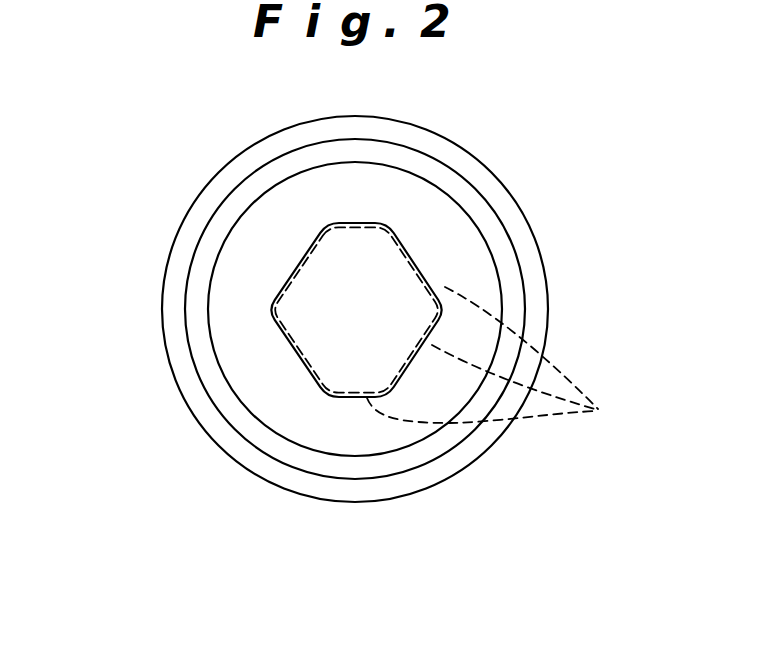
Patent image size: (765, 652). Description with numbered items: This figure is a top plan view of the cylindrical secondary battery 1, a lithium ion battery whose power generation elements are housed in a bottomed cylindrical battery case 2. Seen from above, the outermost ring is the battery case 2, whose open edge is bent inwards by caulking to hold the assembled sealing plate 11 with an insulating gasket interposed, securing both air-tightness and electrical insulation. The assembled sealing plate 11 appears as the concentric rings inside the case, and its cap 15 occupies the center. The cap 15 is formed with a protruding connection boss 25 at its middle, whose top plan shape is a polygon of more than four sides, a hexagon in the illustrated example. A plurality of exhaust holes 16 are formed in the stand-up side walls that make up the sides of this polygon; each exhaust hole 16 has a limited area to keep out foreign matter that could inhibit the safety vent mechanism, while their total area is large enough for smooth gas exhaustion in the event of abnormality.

The cylindrical secondary battery 1 is at (157, 315).
The battery case 2 is at (188, 375).
The assembled sealing plate 11 is at (243, 262).
The cap 15 is at (457, 258).
The exhaust holes 16 is at (602, 410).
The connection boss 25 is at (368, 292).